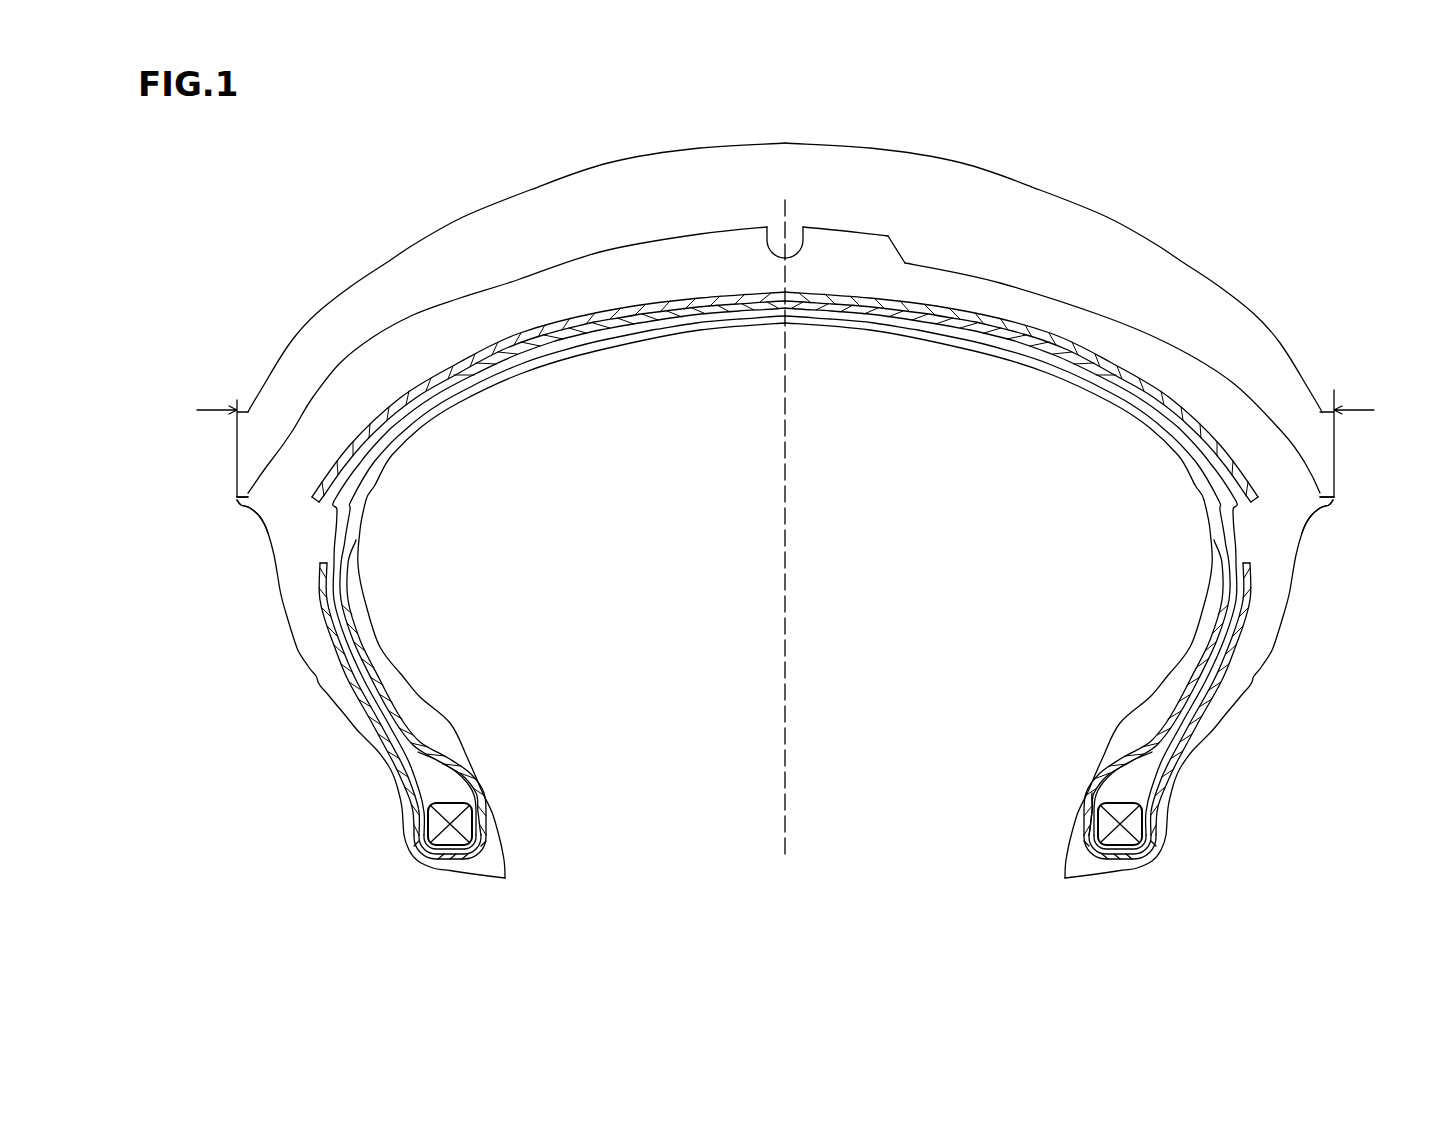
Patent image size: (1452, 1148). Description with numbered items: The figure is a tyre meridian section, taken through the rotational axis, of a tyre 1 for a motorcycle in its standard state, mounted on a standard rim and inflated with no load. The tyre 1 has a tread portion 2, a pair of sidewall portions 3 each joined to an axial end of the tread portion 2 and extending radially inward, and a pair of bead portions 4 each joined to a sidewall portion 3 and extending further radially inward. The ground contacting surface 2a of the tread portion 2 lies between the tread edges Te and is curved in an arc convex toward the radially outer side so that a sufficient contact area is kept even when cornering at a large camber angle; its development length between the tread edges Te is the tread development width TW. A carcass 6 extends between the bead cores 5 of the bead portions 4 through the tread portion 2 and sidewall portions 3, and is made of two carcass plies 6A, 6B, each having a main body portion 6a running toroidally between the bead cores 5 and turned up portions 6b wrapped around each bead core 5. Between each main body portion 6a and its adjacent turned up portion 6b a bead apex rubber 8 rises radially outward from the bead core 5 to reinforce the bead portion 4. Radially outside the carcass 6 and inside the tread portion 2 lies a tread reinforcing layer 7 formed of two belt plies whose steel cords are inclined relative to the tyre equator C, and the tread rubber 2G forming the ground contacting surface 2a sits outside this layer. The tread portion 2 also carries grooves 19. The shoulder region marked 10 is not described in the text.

The tyre 1 is at (1290, 216).
The tread portion 2 is at (1200, 247).
The ground contacting surface 2a is at (557, 257).
The tread rubber 2G is at (668, 265).
The grooves 19 is at (948, 258).
The sidewall portions 3 is at (290, 662).
The shoulder portion 10 is at (237, 503).
The bead portions 4 is at (390, 838).
The bead cores 5 is at (448, 840).
The carcass 6 is at (1018, 652).
The carcass ply 6A is at (1107, 758).
The carcass ply 6B is at (1142, 732).
The main body portion 6a is at (1090, 797).
The turned up portions 6b is at (1157, 803).
The tread reinforcing layer 7 is at (887, 298).
The bead apex rubber 8 is at (442, 787).
The tread development width TW is at (785, 305).
The tread edges Te is at (235, 497).
The tyre equator C is at (785, 515).